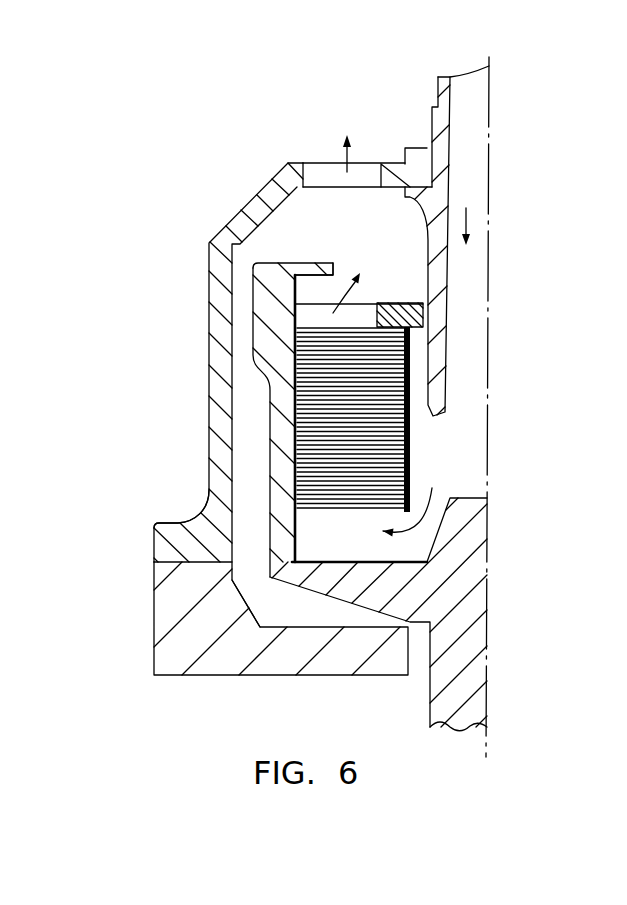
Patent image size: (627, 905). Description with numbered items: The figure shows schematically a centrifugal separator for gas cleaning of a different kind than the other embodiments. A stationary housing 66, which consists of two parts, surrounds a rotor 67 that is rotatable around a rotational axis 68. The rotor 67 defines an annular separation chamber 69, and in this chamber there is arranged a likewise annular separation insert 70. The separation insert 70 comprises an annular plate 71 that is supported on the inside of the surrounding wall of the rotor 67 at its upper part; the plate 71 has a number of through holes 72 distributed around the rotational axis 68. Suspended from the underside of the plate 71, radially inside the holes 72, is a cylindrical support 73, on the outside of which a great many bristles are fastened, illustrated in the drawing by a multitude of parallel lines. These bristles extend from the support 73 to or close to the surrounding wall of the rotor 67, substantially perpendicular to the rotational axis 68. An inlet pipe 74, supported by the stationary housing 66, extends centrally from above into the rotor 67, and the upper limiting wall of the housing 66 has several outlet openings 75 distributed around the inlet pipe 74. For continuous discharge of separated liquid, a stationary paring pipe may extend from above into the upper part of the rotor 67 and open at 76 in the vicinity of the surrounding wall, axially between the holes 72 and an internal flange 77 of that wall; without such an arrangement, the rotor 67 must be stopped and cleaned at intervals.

The stationary housing 66 is at (167, 538).
The rotor 67 is at (327, 583).
The rotational axis 68 is at (489, 103).
The annular separation chamber 69 is at (423, 445).
The separation insert 70 is at (332, 408).
The annular plate 71 is at (413, 302).
The through holes 72 is at (320, 313).
The cylindrical support 73 is at (407, 482).
The inlet pipe 74 is at (442, 122).
The outlet openings 75 is at (322, 172).
The paring pipe opening 76 is at (323, 260).
The internal flange 77 is at (326, 266).